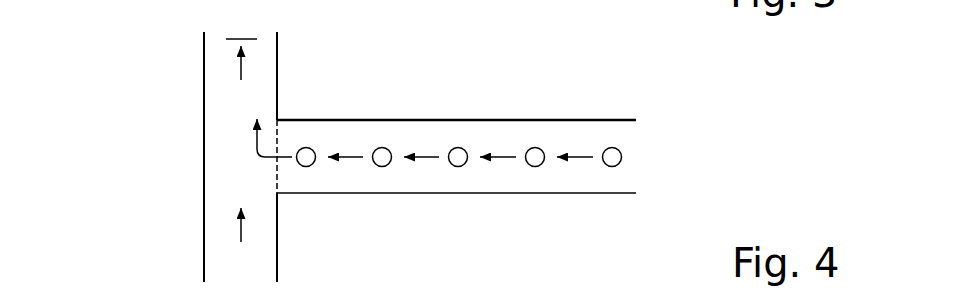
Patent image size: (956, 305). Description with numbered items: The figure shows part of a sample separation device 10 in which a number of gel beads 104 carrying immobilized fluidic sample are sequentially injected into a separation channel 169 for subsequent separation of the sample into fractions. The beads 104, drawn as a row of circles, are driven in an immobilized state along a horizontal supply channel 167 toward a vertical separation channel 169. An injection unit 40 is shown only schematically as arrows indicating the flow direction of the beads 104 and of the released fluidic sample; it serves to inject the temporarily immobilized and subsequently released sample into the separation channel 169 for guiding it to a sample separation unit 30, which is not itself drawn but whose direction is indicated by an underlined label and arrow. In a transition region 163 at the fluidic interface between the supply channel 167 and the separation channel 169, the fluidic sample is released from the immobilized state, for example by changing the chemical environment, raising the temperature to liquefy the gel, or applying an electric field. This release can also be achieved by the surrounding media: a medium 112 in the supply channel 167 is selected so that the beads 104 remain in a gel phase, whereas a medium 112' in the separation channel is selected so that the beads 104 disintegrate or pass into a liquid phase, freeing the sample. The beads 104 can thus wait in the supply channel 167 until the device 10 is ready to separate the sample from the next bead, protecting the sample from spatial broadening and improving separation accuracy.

The sample separation device 10 is at (349, 141).
The sample separation unit 30 is at (241, 47).
The injection unit 40 is at (266, 146).
The gel beads 104 is at (309, 166).
The medium 112 is at (456, 116).
The medium 112' is at (199, 157).
The transition region 163 is at (245, 163).
The supply channel 167 is at (484, 132).
The separation channel 169 is at (231, 196).